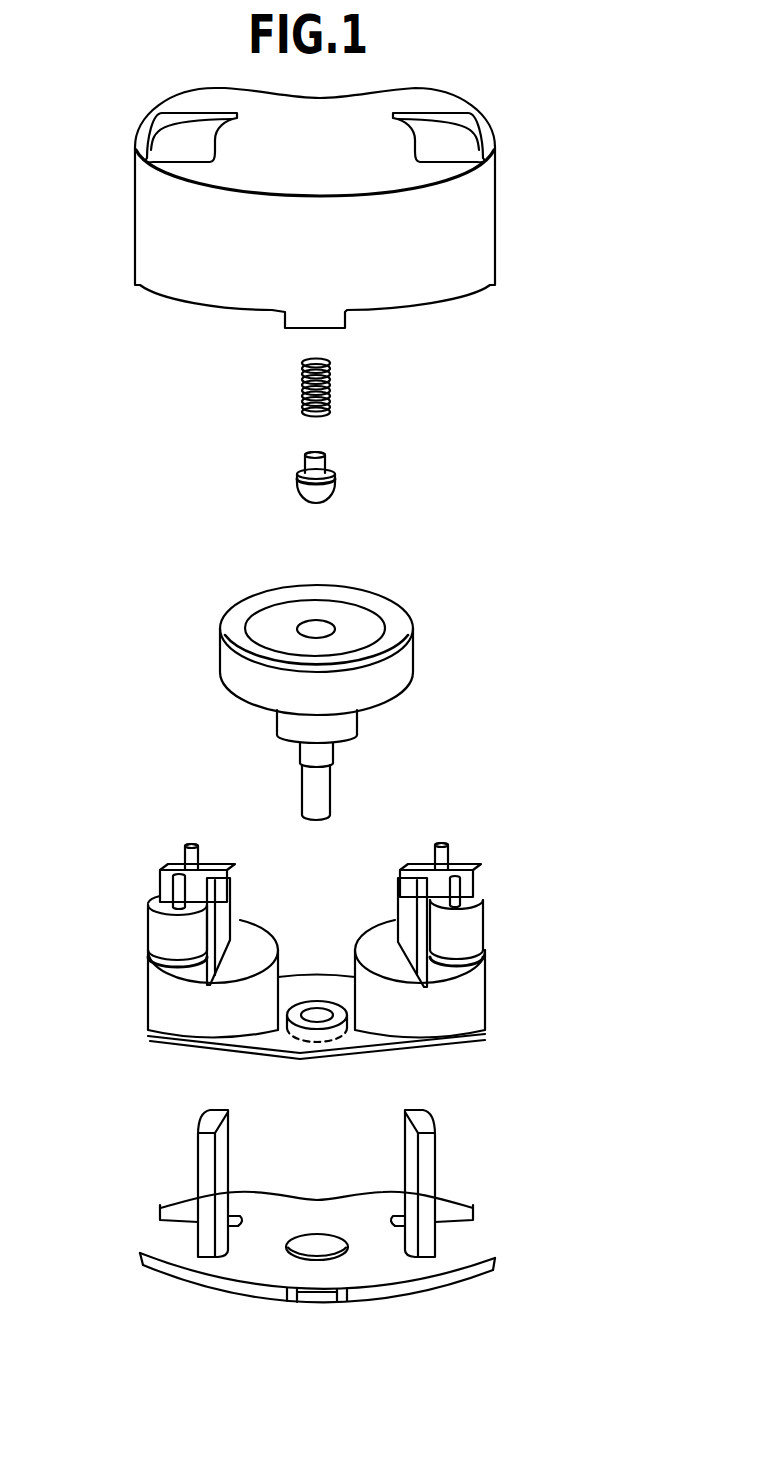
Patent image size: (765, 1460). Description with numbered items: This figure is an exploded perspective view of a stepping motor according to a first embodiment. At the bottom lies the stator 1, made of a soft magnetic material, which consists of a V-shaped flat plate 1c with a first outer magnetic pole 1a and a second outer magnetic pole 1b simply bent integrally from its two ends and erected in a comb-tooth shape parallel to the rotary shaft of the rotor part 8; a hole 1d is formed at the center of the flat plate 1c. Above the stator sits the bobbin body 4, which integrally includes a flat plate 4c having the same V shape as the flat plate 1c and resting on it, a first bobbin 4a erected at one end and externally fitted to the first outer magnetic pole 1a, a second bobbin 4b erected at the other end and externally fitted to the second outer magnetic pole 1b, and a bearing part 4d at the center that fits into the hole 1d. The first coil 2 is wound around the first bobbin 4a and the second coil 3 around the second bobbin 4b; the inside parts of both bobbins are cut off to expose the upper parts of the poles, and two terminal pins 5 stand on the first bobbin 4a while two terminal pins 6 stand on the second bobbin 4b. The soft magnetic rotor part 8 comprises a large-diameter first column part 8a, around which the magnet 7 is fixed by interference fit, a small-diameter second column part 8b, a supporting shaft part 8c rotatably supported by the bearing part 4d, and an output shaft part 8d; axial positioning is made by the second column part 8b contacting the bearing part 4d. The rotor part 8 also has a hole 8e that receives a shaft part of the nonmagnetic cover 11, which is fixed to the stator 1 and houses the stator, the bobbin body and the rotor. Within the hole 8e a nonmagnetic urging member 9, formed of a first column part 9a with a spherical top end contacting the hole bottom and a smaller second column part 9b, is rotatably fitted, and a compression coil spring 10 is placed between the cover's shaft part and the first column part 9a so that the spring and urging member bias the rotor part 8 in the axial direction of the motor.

The stator 1 is at (312, 1245).
The first outer magnetic pole 1a is at (198, 1160).
The second outer magnetic pole 1b is at (436, 1155).
The flat plate 1c is at (260, 1280).
The hole 1d is at (318, 1243).
The first coil 2 is at (160, 1005).
The second coil 3 is at (465, 1005).
The bobbin body 4 is at (311, 967).
The first bobbin 4a is at (160, 930).
The second bobbin 4b is at (487, 925).
The flat plate 4c is at (360, 1040).
The bearing part 4d is at (285, 1022).
The terminal pins 5 is at (184, 852).
The terminal pins 6 is at (449, 855).
The magnet 7 is at (415, 656).
The rotor part 8 is at (314, 677).
The first column part 8a is at (355, 617).
The second column part 8b is at (350, 725).
The supporting shaft part 8c is at (334, 752).
The output shaft part 8d is at (312, 787).
The hole 8e is at (303, 622).
The urging member 9 is at (305, 479).
The first column part 9a is at (292, 485).
The second column part 9b is at (326, 458).
The compression coil spring 10 is at (300, 382).
The cover 11 is at (140, 207).